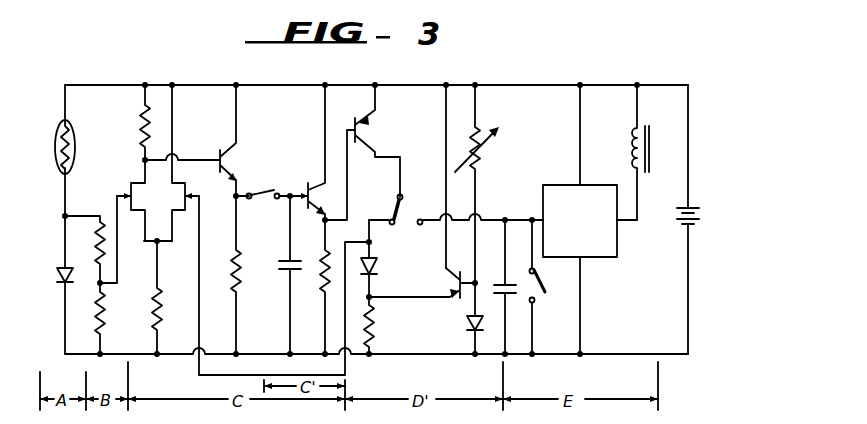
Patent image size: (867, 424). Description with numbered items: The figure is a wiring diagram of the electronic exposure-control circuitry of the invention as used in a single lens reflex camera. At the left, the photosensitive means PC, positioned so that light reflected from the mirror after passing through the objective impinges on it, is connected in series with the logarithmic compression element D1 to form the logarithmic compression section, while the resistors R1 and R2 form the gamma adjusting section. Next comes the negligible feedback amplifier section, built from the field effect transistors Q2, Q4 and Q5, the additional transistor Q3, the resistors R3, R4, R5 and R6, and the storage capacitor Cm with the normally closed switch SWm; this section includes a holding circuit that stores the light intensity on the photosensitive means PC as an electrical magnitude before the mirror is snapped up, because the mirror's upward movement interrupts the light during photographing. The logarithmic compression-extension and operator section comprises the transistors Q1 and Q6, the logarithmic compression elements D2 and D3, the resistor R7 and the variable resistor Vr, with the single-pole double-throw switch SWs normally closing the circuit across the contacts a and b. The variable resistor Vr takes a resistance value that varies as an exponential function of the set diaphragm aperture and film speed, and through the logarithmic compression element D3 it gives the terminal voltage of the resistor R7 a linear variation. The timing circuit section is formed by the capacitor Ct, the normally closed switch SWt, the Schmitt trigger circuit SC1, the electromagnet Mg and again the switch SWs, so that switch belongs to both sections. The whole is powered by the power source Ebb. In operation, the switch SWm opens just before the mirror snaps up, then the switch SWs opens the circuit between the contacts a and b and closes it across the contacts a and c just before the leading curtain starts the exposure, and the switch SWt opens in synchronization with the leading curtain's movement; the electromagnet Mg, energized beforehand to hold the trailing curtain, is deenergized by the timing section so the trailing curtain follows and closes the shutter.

The photosensitive means PC is at (75, 155).
The logarithmic compression element D1 is at (62, 287).
The resistor R1 is at (93, 250).
The resistor R2 is at (94, 314).
The resistor R3 is at (137, 133).
The resistor R4 is at (153, 298).
The resistor R5 is at (223, 275).
The resistor R6 is at (326, 288).
The resistor R7 is at (375, 320).
The transistor Q1 is at (364, 152).
The field effect transistor Q2 is at (315, 219).
The transistor Q3 is at (204, 140).
The field effect transistor Q4 is at (183, 213).
The field effect transistor Q5 is at (136, 192).
The transistor Q6 is at (452, 299).
The normally closed switch SWm is at (263, 185).
The single-pole double-throw switch SWs is at (409, 204).
The normally closed switch SWt is at (549, 285).
The contact a is at (396, 195).
The contact b is at (388, 240).
The contact c is at (420, 226).
The storage capacitor Cm is at (280, 276).
The capacitor Ct is at (517, 285).
The logarithmic compression element D2 is at (378, 270).
The logarithmic compression element D3 is at (467, 324).
The variable resistor Vr is at (488, 158).
The Schmitt trigger circuit SC1 is at (590, 219).
The electromagnet Mg is at (651, 153).
The power source Ebb is at (698, 227).